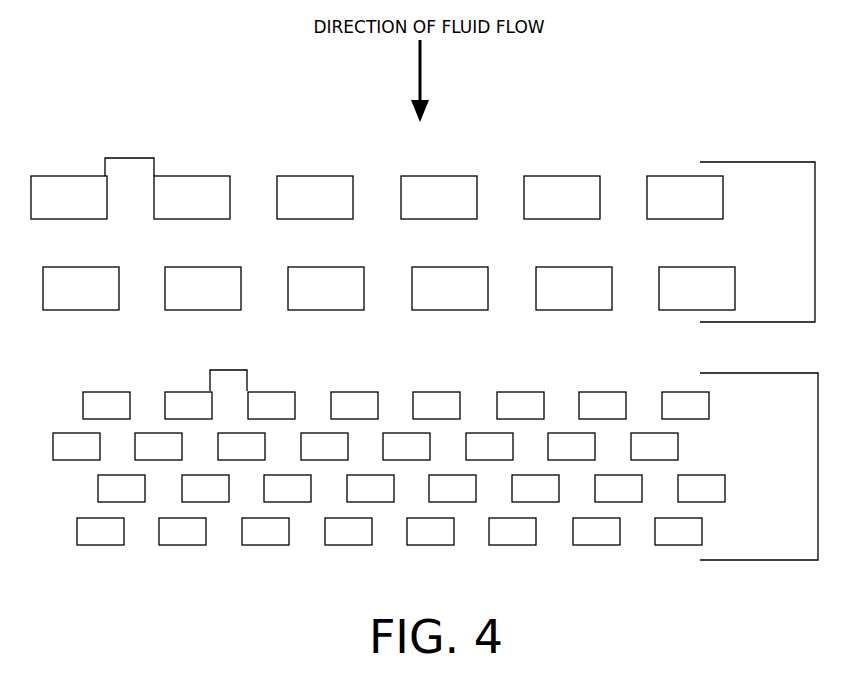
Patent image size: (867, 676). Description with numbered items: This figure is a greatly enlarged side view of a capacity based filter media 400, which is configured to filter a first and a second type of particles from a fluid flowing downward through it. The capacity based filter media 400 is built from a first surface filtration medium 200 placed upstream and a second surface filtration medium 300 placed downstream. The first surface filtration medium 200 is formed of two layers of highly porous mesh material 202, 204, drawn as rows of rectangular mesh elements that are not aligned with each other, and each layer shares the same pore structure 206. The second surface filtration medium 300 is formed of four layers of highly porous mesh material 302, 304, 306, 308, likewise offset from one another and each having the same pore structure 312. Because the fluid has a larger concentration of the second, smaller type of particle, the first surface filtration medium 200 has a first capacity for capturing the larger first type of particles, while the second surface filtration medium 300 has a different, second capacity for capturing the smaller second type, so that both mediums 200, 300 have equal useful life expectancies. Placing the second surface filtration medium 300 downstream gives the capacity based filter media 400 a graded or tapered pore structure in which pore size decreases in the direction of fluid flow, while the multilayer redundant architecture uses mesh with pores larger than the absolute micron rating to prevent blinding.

The capacity based filter media 400 is at (732, 114).
The first surface filtration medium 200 is at (860, 240).
The layer of mesh material 202 is at (737, 209).
The layer of mesh material 204 is at (746, 301).
The pore structure 206 is at (130, 158).
The second surface filtration medium 300 is at (818, 466).
The layer of mesh material 302 is at (719, 404).
The layer of mesh material 304 is at (702, 448).
The layer of mesh material 306 is at (738, 490).
The layer of mesh material 308 is at (719, 536).
The pore structure 312 is at (229, 370).